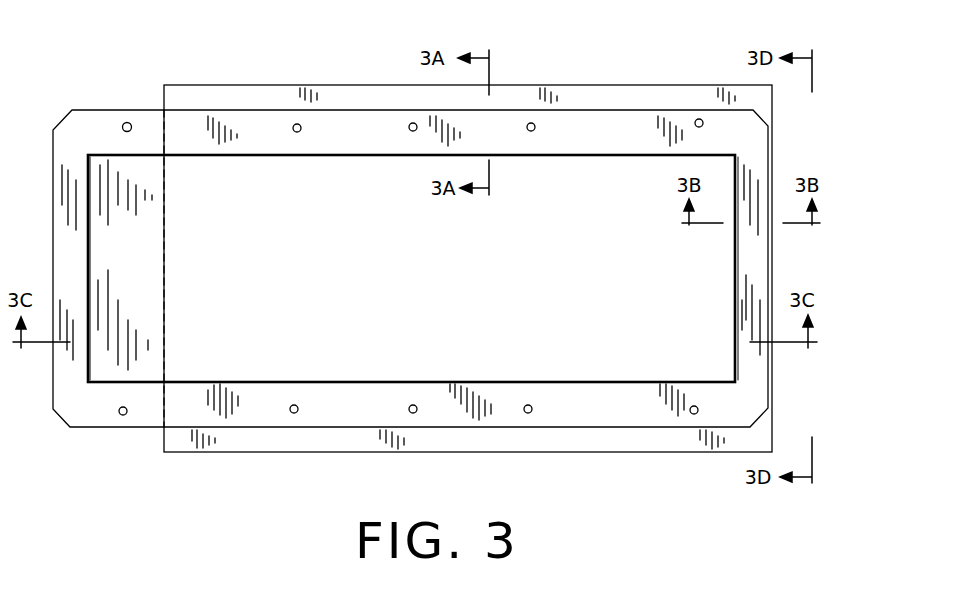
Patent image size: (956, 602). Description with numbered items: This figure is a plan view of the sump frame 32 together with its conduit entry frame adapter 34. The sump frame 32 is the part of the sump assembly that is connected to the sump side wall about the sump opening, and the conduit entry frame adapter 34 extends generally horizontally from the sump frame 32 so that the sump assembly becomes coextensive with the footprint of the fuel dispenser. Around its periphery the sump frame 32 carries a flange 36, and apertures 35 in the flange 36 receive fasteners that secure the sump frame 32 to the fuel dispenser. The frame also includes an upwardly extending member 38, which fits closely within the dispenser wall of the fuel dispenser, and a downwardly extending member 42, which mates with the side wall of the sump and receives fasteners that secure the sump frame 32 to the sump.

The sump frame 32 is at (418, 215).
The conduit entry frame adapter 34 is at (123, 203).
The apertures 35 is at (127, 122).
The flange 36 is at (762, 253).
The upwardly extending member 38 is at (565, 157).
The downwardly extending member 42 is at (367, 83).